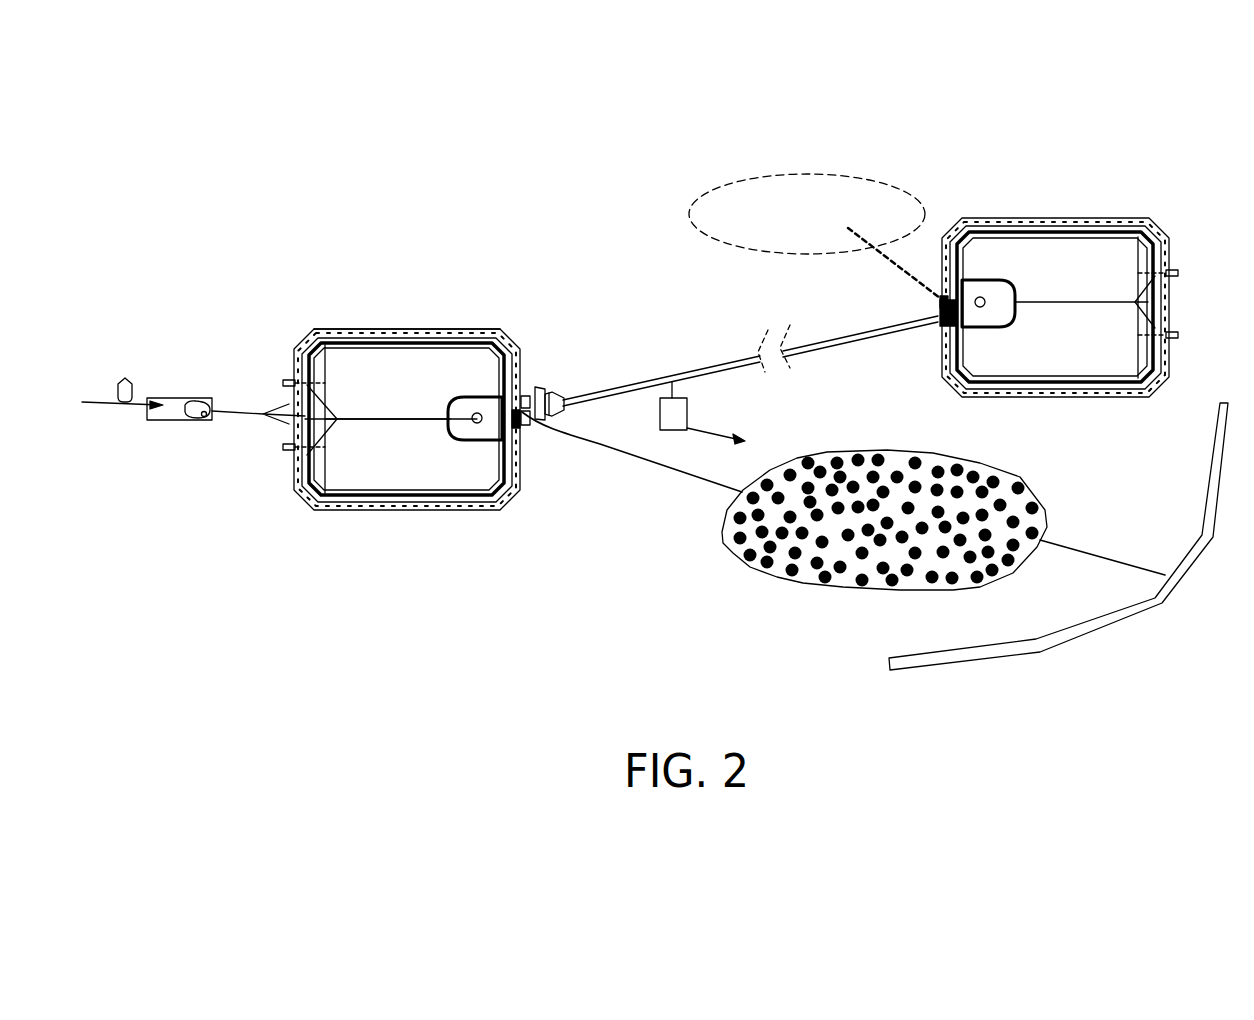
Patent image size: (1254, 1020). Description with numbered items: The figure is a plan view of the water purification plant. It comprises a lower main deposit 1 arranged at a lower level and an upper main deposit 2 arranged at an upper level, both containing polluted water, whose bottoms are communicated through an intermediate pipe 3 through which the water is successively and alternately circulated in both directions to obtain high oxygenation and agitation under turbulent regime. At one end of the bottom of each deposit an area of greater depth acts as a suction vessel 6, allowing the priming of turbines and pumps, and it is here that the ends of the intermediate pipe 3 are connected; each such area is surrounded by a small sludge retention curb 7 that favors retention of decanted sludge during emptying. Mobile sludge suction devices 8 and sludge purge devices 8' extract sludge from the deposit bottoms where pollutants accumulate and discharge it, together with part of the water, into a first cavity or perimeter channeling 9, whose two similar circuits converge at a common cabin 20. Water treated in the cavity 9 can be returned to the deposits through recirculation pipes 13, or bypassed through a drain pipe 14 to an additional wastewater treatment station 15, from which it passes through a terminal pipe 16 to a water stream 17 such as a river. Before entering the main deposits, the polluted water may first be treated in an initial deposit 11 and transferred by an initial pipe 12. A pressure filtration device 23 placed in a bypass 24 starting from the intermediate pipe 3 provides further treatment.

The lower main deposit 1 is at (394, 318).
The upper main deposit 2 is at (1101, 206).
The intermediate pipe 3 is at (650, 378).
The suction vessel 6 is at (480, 410).
The sludge retention curb 7 is at (465, 442).
The sludge suction devices 8 is at (717, 382).
The sludge purge devices 8' is at (736, 426).
The first cavity or perimeter channeling 9 is at (458, 335).
The initial deposit 11 is at (175, 436).
The initial pipe 12 is at (263, 416).
The recirculation pipes 13 is at (517, 430).
The drain pipe 14 is at (655, 466).
The additional wastewater treatment station 15 is at (842, 590).
The terminal pipe 16 is at (1115, 562).
The water stream 17 is at (1138, 608).
The common cabin 20 is at (518, 406).
The pressure filtration device 23 is at (687, 415).
The bypass 24 is at (680, 388).